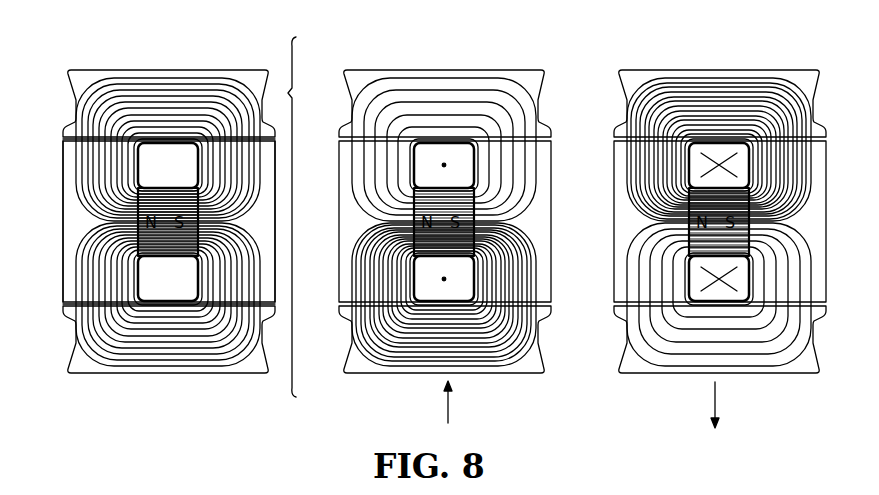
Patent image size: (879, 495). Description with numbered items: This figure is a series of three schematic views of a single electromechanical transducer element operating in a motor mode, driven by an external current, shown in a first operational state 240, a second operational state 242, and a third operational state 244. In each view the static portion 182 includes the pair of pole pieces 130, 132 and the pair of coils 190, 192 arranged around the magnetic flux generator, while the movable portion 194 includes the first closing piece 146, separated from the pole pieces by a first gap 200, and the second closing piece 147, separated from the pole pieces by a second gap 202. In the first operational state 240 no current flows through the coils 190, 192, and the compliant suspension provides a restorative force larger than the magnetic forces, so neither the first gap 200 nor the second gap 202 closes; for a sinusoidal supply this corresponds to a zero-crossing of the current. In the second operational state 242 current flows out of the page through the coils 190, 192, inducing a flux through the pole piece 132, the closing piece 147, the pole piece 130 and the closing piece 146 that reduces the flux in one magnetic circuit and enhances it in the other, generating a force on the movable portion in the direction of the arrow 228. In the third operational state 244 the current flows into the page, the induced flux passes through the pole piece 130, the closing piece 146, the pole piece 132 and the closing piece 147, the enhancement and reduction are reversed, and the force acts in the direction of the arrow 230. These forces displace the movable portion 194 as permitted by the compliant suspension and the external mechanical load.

The pole piece 130 is at (275, 207).
The pole piece 132 is at (63, 230).
The first closing piece 146 is at (243, 70).
The second closing piece 147 is at (244, 373).
The static portion 182 is at (58, 198).
The coil 190 is at (138, 166).
The coil 192 is at (138, 280).
The movable portion 194 is at (314, 217).
The first gap 200 is at (62, 144).
The second gap 202 is at (61, 303).
The arrow 228 is at (450, 400).
The arrow 230 is at (717, 402).
The first operational state 240 is at (83, 59).
The second operational state 242 is at (367, 59).
The third operational state 244 is at (632, 59).